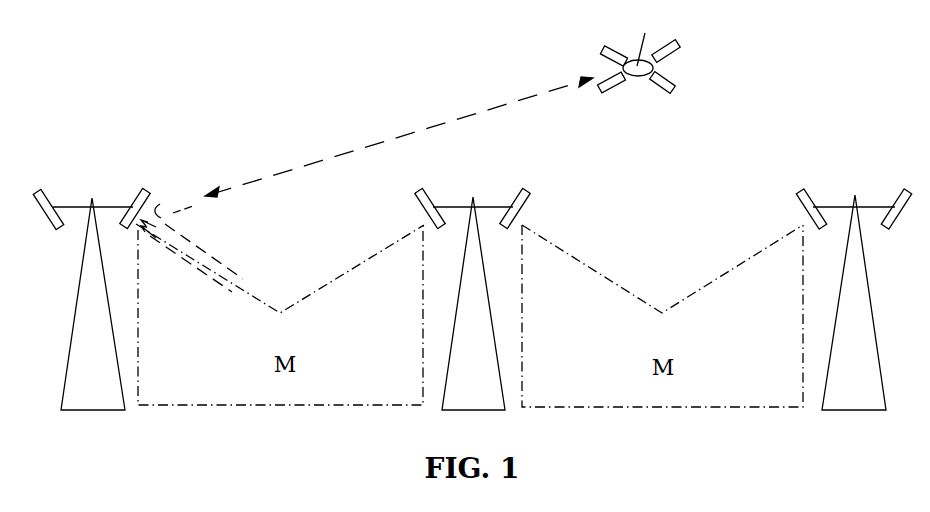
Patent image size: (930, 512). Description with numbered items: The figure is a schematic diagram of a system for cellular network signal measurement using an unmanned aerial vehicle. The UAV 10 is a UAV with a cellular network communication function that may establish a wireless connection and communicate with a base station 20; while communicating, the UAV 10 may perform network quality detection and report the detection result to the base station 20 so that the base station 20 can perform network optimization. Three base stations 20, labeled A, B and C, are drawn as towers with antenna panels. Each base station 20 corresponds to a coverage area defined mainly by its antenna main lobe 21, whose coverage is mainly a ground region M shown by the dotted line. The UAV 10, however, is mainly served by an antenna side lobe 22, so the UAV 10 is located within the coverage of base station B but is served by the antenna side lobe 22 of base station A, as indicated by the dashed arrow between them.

The UAV 10 is at (674, 91).
The base station 20 is at (92, 200).
The antenna main lobe 21 is at (233, 266).
The antenna side lobe 22 is at (195, 195).